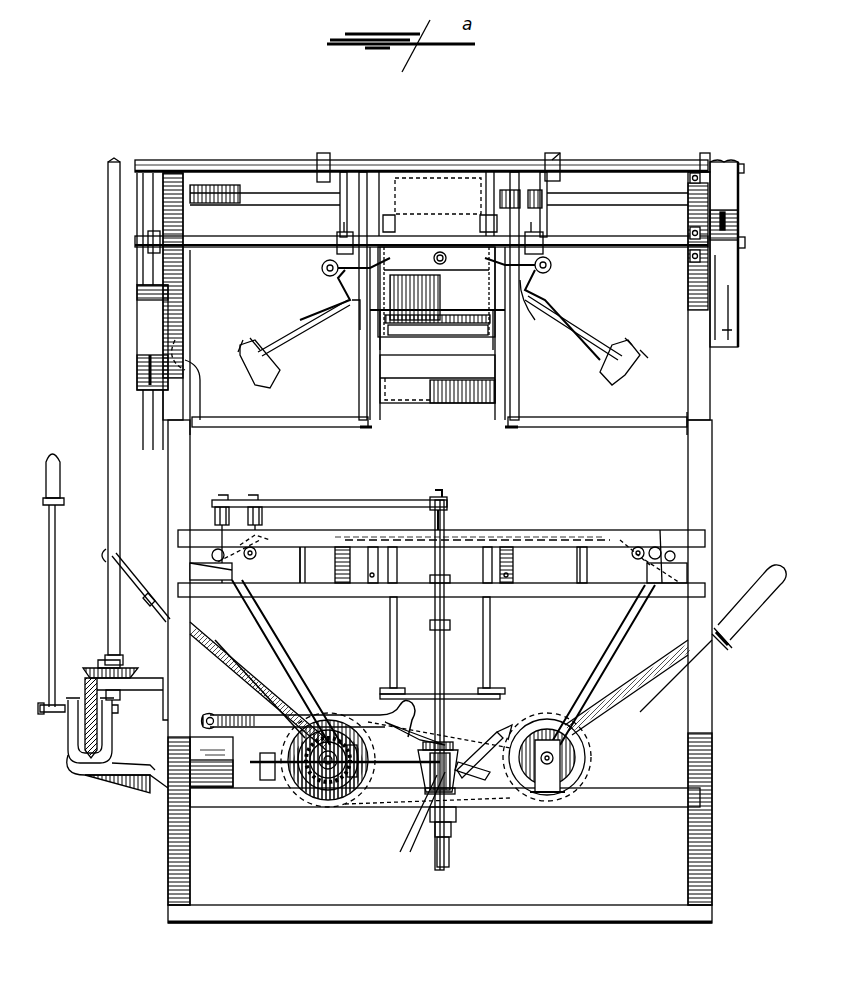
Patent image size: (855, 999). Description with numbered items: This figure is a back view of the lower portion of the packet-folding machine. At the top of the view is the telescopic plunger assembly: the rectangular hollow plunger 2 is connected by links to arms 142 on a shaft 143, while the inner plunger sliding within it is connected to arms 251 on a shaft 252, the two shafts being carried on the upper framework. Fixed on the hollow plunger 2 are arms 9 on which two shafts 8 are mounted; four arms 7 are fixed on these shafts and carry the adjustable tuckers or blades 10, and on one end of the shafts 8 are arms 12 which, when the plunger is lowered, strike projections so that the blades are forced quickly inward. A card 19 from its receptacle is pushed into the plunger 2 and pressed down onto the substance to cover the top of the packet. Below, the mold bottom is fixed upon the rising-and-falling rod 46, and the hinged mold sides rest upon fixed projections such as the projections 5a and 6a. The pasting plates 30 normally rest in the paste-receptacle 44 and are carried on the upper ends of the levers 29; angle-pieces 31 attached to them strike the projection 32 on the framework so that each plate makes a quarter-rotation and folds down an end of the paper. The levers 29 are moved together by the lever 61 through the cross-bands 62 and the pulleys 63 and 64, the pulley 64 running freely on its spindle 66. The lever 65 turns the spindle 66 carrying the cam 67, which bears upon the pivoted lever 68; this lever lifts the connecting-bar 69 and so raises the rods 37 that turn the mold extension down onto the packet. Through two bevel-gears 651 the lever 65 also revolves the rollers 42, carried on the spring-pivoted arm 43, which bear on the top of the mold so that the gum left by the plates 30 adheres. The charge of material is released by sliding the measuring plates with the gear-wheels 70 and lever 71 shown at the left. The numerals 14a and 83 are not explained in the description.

The arms 251 is at (320, 158).
The shaft 252 is at (460, 160).
The arms 142 is at (545, 226).
The shaft 143 is at (432, 245).
The post 14a is at (195, 295).
The block 83 is at (196, 378).
The cards 19 is at (437, 298).
The hollow plunger 2 is at (455, 392).
The shafts 8 is at (322, 268).
The arms 9 is at (553, 267).
The arms 12 is at (450, 315).
The arms 7 is at (305, 326).
The tuckers or blades 10 is at (275, 368).
The spring-pivoted arm 43 is at (357, 500).
The rollers 42 is at (228, 497).
The plates 30 is at (208, 558).
The paste-receptacle 44 is at (226, 580).
The projection 32 is at (290, 568).
The angle-pieces 31 is at (597, 565).
The rising-and-falling rod or table 46 is at (447, 560).
The fixed projection 6a is at (372, 580).
The fixed projection 5a is at (508, 580).
The rods or projections 37 is at (398, 644).
The connecting-bar 69 is at (462, 694).
The lever 65 is at (280, 640).
The levers 29 is at (592, 652).
The cam 67 is at (325, 740).
The lever 61 is at (628, 690).
The pivoted lever 68 is at (400, 708).
The spindle 66 is at (330, 780).
The pulley 64 is at (285, 750).
The cross-bands 62 is at (500, 733).
The bevel-gears 651 is at (415, 825).
The pulley 63 is at (580, 765).
The lever 71 is at (52, 556).
The gear-wheels 70 is at (85, 660).